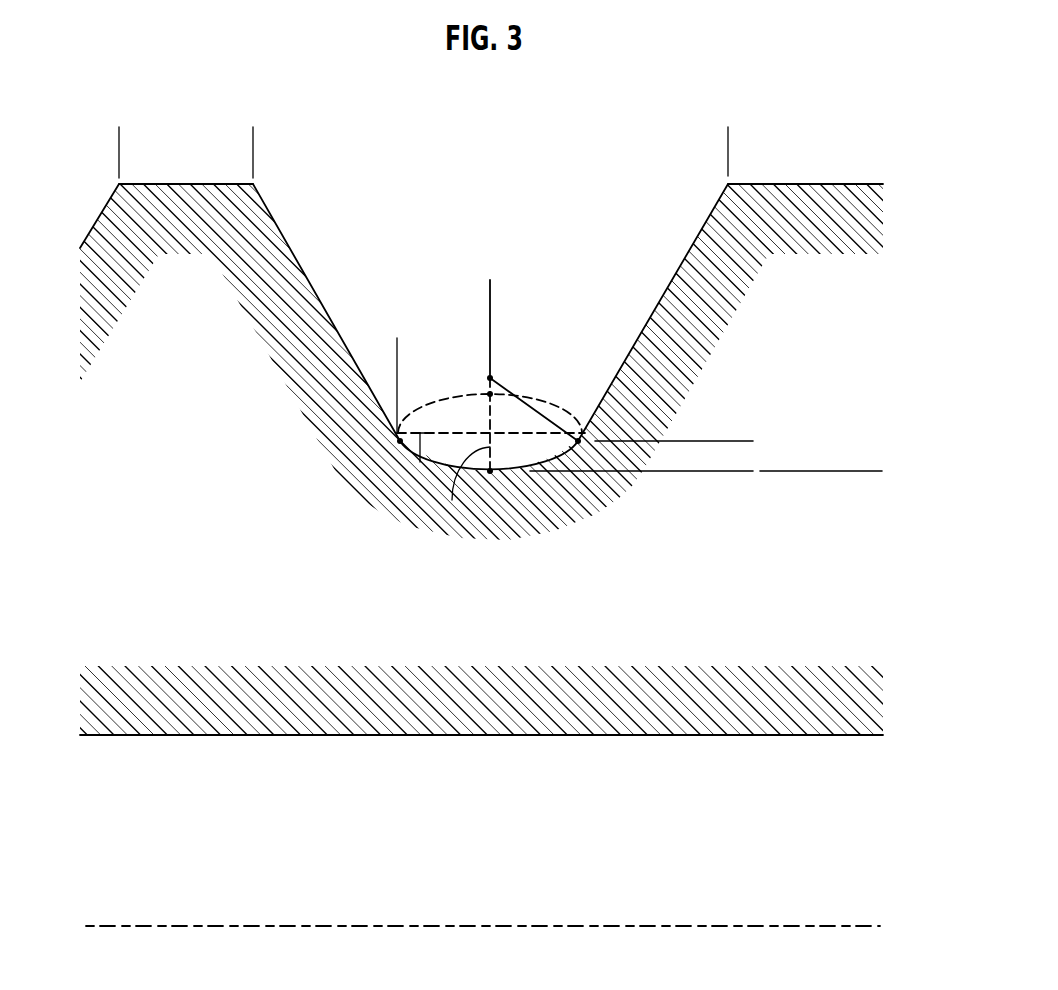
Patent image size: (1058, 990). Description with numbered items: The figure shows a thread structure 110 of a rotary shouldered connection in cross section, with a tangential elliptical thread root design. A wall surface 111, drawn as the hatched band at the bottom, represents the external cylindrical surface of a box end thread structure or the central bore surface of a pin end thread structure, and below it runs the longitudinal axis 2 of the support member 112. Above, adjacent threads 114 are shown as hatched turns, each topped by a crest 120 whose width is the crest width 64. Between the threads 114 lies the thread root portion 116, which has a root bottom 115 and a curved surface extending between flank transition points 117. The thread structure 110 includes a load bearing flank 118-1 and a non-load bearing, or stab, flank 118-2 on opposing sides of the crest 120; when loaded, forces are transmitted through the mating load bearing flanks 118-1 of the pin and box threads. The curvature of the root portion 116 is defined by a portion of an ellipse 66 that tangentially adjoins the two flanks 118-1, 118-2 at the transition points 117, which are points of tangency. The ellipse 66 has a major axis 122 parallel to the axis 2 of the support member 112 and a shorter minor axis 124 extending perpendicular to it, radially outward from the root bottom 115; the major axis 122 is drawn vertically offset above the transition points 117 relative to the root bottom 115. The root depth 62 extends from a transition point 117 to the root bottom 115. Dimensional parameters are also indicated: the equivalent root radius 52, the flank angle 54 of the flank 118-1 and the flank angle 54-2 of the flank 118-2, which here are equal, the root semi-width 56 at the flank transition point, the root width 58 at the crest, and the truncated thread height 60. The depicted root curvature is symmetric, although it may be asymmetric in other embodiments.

The longitudinal axis 2 is at (653, 925).
The equivalent root radius 52 is at (492, 377).
The flank angle 54 is at (488, 292).
The flank angle 54-2 is at (492, 292).
The root semi-width at flank transition point 56 is at (397, 347).
The root width at crest 58 is at (728, 137).
The truncated thread height 60 is at (858, 184).
The root depth 62 is at (739, 495).
The crest width 64 is at (119, 138).
The ellipse 66 is at (565, 412).
The thread structure 110 is at (768, 103).
The wall surface 111 is at (280, 737).
The support member 112 is at (474, 711).
The thread 114 is at (169, 229).
The root bottom 115 is at (490, 474).
The thread root portion 116 is at (556, 456).
The flank transition point 117 is at (398, 441).
The load bearing flank 118-1 is at (287, 243).
The non-load bearing flank 118-2 is at (93, 227).
The crest 120 is at (790, 183).
The major axis 122 is at (420, 462).
The minor axis 124 is at (460, 484).